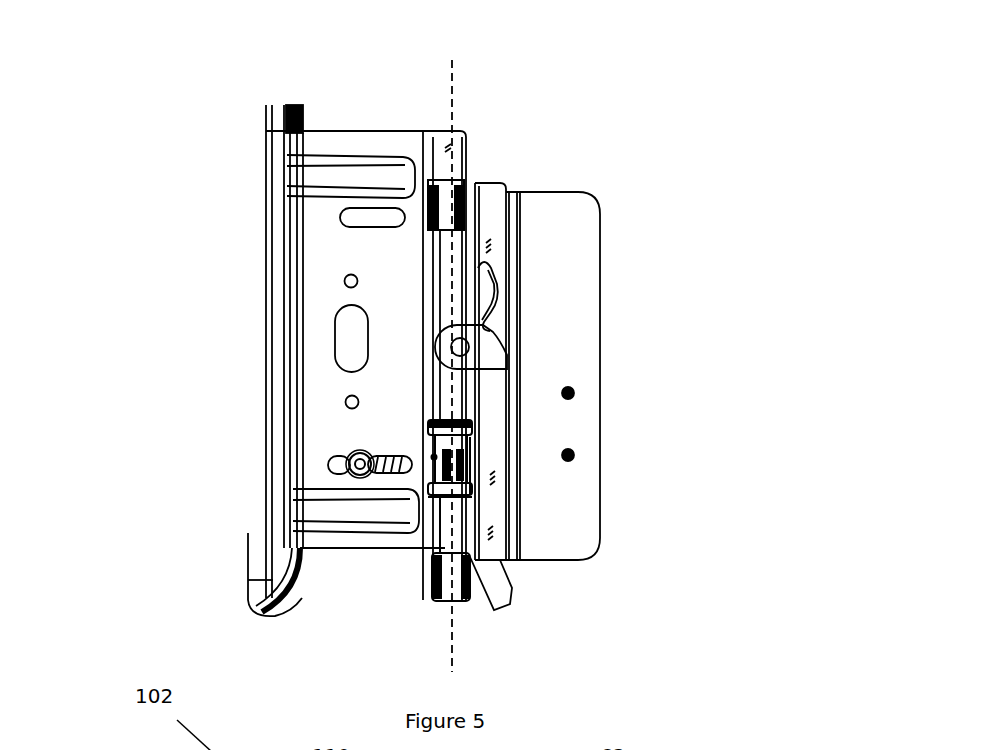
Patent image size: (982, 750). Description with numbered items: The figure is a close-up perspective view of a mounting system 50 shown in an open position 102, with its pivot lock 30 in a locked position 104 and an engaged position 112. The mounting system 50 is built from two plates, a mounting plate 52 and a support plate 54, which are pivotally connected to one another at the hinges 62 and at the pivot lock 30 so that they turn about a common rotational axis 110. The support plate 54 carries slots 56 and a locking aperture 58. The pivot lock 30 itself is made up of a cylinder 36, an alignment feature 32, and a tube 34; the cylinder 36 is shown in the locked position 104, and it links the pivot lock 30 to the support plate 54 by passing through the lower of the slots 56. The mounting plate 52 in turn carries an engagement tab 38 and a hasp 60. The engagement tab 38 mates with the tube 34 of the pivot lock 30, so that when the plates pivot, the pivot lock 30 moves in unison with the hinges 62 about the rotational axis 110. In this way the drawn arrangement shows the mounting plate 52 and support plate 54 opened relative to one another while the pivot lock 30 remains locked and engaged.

The pivot lock 30 is at (468, 442).
The alignment feature 32 is at (385, 455).
The tube 34 is at (482, 458).
The cylinder 36 is at (350, 460).
The engagement tab 38 is at (450, 397).
The mounting system 50 is at (558, 132).
The mounting plate 52 is at (572, 268).
The support plate 54 is at (388, 118).
The slots 56 is at (368, 218).
The locking aperture 58 is at (345, 320).
The hasp 60 is at (468, 345).
The hinges 62 is at (450, 143).
The open position 102 is at (655, 346).
The locked position 104 is at (355, 465).
The rotational axis 110 is at (452, 108).
The engaged position 112 is at (475, 467).